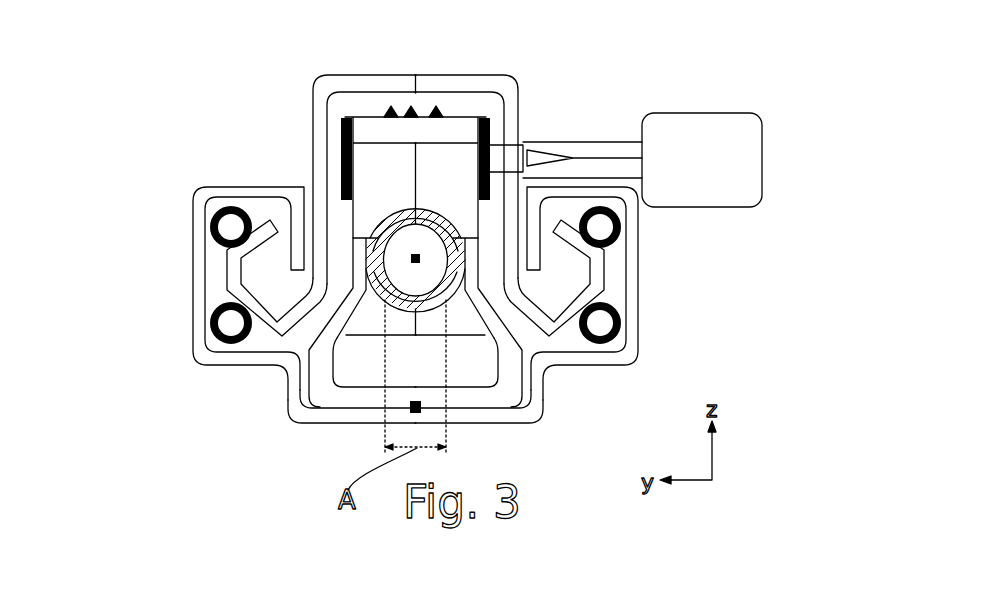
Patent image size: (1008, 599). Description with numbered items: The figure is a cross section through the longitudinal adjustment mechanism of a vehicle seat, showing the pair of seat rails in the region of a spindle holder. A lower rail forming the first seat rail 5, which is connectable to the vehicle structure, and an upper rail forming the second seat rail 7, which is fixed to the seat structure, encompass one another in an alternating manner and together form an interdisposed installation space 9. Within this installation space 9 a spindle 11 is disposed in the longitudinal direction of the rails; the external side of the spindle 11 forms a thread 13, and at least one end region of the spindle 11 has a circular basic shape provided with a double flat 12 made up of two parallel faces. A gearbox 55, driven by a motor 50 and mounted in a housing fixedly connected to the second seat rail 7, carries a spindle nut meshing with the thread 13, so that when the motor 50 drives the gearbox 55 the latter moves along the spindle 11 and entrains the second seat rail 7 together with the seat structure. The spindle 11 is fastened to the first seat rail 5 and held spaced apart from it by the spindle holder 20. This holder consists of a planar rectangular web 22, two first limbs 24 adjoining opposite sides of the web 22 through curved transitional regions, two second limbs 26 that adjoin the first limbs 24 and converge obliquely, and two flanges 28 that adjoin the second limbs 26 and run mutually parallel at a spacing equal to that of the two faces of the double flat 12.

The first seat rail 5 is at (200, 203).
The second seat rail 7 is at (312, 112).
The installation space 9 is at (330, 214).
The spindle 11 is at (342, 218).
The double flat 12 is at (432, 200).
The thread 13 is at (392, 195).
The spindle holder 20 is at (548, 392).
The web 22 is at (463, 398).
The first limbs 24 is at (300, 372).
The second limbs 26 is at (362, 342).
The flanges 28 is at (212, 232).
The motor 50 is at (712, 118).
The gearbox 55 is at (478, 158).